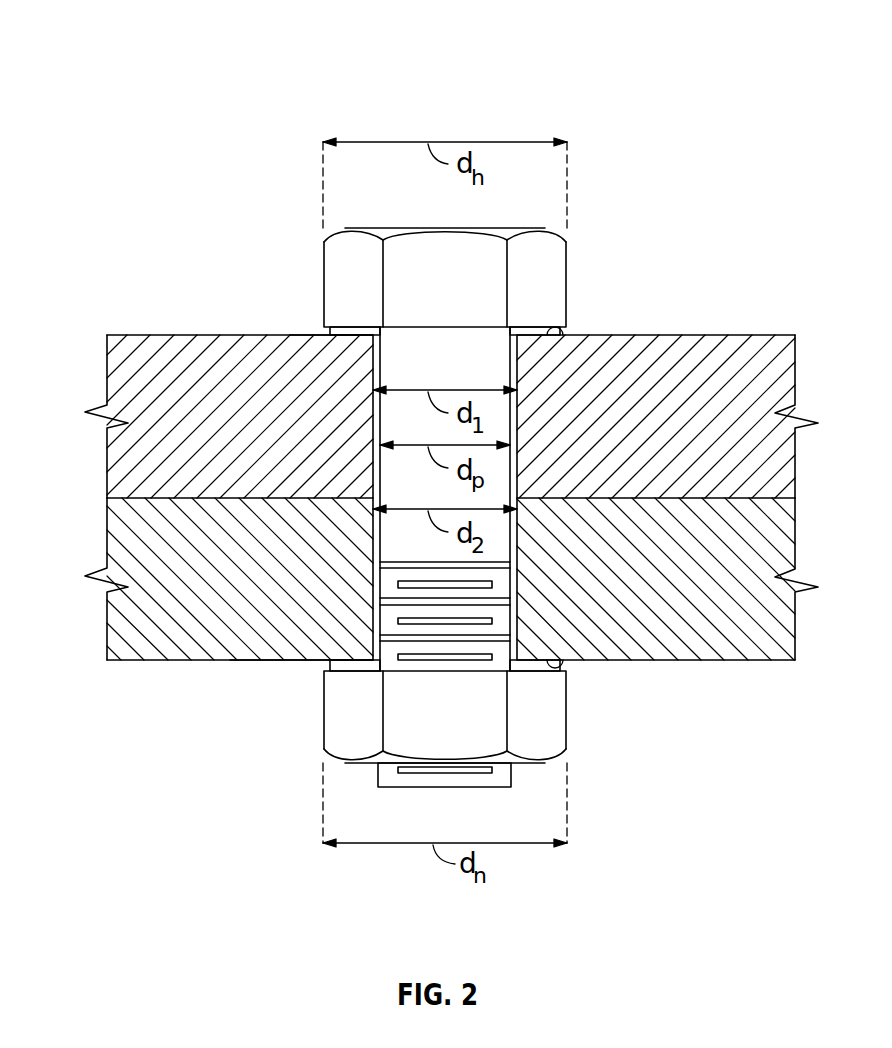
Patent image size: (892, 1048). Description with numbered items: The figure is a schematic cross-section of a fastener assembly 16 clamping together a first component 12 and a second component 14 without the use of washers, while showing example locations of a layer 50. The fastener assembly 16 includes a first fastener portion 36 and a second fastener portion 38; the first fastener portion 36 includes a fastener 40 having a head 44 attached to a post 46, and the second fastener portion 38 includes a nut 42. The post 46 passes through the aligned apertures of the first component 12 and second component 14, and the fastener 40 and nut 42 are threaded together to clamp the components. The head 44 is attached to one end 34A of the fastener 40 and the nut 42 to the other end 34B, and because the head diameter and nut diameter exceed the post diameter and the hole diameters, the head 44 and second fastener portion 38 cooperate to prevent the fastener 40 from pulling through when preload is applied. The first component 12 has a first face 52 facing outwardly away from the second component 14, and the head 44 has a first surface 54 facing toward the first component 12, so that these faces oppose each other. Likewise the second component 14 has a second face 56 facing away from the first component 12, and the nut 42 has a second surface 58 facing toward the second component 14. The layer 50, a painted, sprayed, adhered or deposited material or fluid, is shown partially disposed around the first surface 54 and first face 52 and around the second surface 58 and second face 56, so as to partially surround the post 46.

The first component 12 is at (122, 472).
The second component 14 is at (122, 532).
The fastener assembly 16 is at (439, 440).
The end of the fastener 34A is at (532, 172).
The another end of the fastener 34B is at (460, 767).
The first fastener portion 36 is at (439, 400).
The second fastener portion 38 is at (517, 729).
The fastener 40 is at (439, 400).
The nut 42 is at (557, 725).
The head 44 is at (565, 258).
The post 46 is at (423, 592).
The layer 50 is at (345, 332).
The first face 52 is at (307, 335).
The first surface 54 is at (562, 333).
The second face 56 is at (250, 661).
The second surface 58 is at (560, 664).